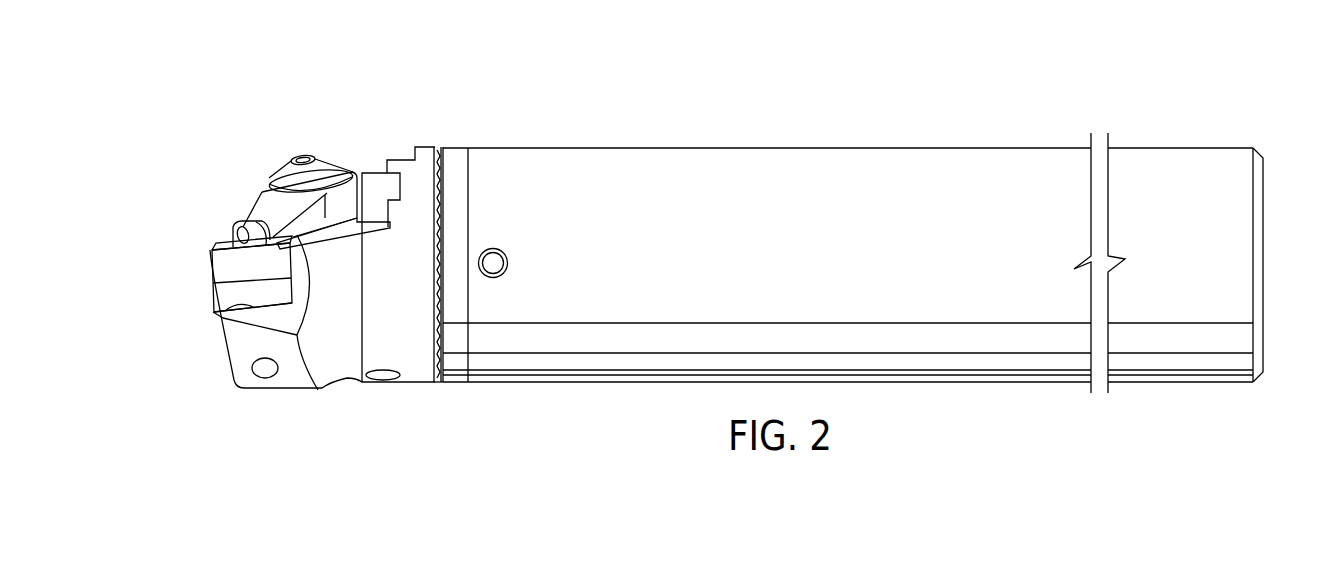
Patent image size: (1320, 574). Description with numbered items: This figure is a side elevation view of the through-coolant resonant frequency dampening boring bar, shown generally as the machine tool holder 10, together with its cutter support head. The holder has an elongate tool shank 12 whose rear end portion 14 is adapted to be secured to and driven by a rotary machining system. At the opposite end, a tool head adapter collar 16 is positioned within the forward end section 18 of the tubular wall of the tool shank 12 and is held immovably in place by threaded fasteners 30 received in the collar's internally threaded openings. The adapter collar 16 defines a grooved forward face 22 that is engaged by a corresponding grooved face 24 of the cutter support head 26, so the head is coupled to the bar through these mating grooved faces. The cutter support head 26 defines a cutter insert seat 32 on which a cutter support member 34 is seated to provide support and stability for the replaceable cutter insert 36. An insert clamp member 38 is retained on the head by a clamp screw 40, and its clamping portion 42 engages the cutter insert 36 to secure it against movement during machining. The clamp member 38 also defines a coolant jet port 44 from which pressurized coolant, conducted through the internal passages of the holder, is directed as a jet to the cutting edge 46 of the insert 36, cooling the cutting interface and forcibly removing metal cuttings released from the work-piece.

The adjustable resonant frequency dampening machine tool holder 10 is at (798, 110).
The tool shank 12 is at (1040, 146).
The rear end portion 14 is at (1185, 146).
The tool head adapter collar 16 is at (458, 148).
The forward end section 18 is at (416, 369).
The grooved forward face 22 is at (437, 158).
The grooved face 24 is at (440, 371).
The cutter support head 26 is at (247, 392).
The threaded fasteners 30 is at (508, 262).
The cutter insert seat 32 is at (227, 313).
The cutter support member 34 is at (230, 292).
The replaceable cutter insert 36 is at (225, 268).
The insert clamp member 38 is at (353, 172).
The clamp screw 40 is at (283, 180).
The clamping portion 42 is at (258, 233).
The coolant jet port 44 is at (242, 236).
The cutting edge 46 is at (215, 256).